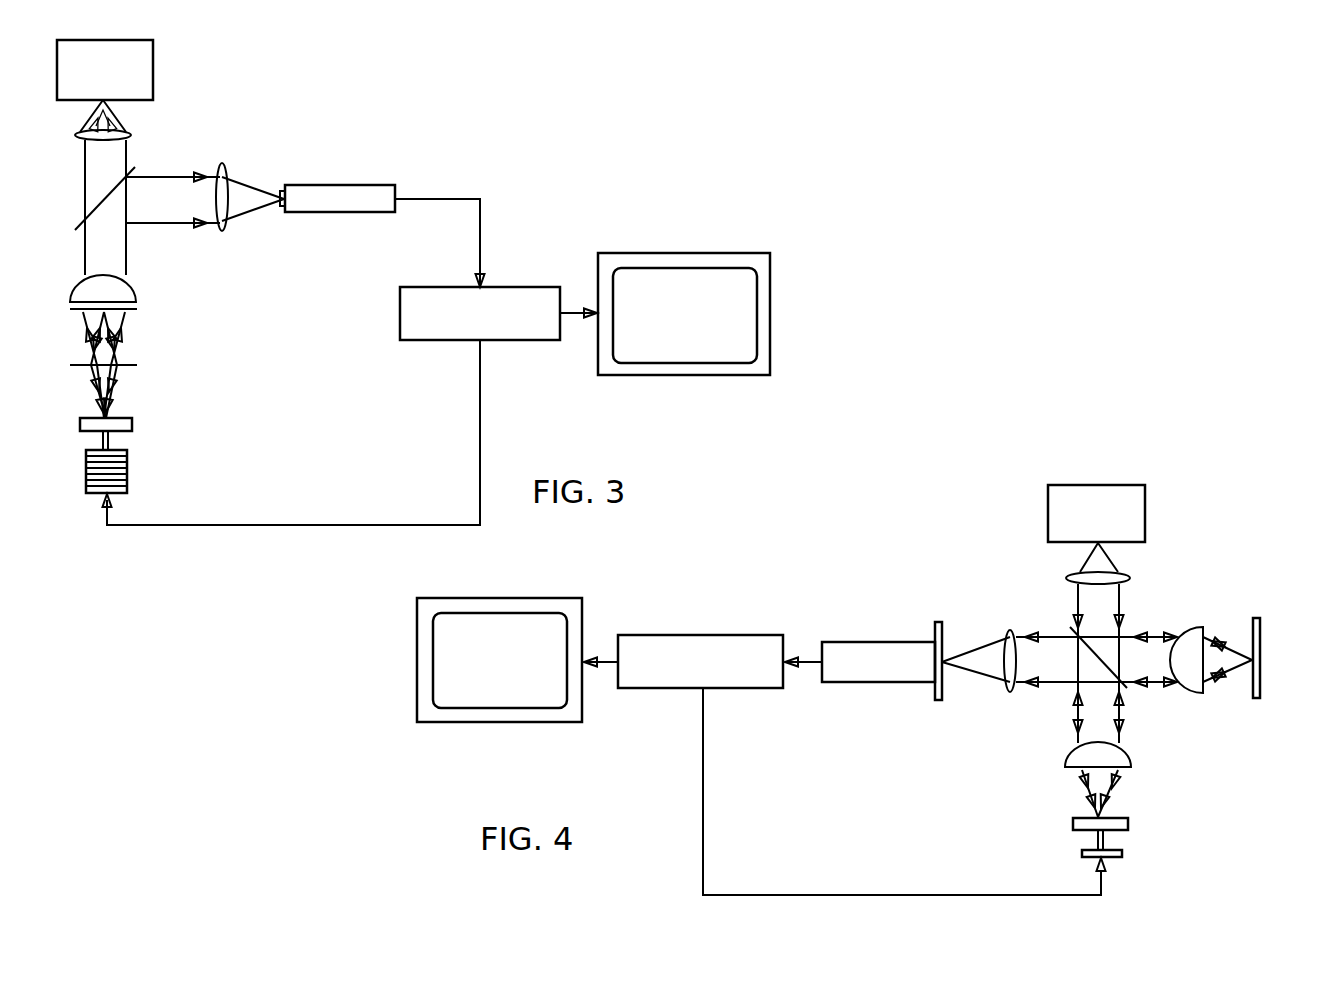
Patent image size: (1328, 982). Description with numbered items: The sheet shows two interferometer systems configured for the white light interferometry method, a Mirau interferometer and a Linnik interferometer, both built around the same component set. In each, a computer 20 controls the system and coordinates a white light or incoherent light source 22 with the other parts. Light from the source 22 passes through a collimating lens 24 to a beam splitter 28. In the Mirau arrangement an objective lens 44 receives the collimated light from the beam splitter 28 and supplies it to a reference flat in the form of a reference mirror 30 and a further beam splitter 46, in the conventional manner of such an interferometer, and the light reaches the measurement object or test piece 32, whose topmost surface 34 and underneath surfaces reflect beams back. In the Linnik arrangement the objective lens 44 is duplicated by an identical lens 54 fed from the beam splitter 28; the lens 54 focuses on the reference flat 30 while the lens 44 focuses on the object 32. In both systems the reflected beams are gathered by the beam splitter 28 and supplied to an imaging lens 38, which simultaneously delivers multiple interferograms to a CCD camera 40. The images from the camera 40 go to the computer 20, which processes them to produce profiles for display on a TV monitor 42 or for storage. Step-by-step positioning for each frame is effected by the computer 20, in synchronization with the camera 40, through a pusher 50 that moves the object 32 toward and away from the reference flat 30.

In FIG. 3, the computer 20 is at (400, 297).
In FIG. 4, the computer 20 is at (657, 690).
In FIG. 3, the light source 22 is at (153, 75).
In FIG. 4, the light source 22 is at (1130, 485).
In FIG. 3, the collimating lens 24 is at (131, 134).
In FIG. 4, the collimating lens 24 is at (1130, 576).
In FIG. 3, the beam splitter 28 is at (100, 202).
In FIG. 4, the beam splitter 28 is at (1096, 656).
In FIG. 3, the reference flat 30 is at (105, 313).
In FIG. 4, the reference flat 30 is at (1257, 618).
In FIG. 3, the test piece 32 is at (133, 424).
In FIG. 4, the test piece 32 is at (1128, 823).
In FIG. 3, the topmost surface 34 is at (80, 421).
In FIG. 4, the topmost surface 34 is at (1073, 820).
In FIG. 3, the imaging lens 38 is at (224, 165).
In FIG. 4, the imaging lens 38 is at (1012, 632).
In FIG. 3, the CCD camera 40 is at (330, 185).
In FIG. 4, the CCD camera 40 is at (850, 642).
In FIG. 3, the TV monitor 42 is at (685, 378).
In FIG. 4, the TV monitor 42 is at (500, 725).
In FIG. 3, the objective lens 44 is at (132, 283).
In FIG. 4, the objective lens 44 is at (1128, 752).
In FIG. 3, the further beam splitter 46 is at (132, 362).
In FIG. 3, the pusher 50 is at (86, 488).
In FIG. 4, the pusher 50 is at (1082, 853).
In FIG. 4, the lens 54 is at (1195, 628).